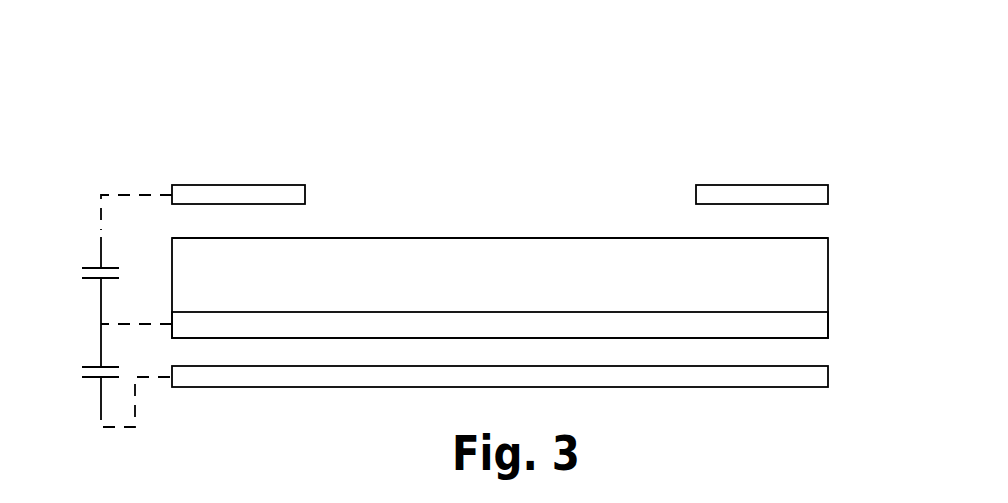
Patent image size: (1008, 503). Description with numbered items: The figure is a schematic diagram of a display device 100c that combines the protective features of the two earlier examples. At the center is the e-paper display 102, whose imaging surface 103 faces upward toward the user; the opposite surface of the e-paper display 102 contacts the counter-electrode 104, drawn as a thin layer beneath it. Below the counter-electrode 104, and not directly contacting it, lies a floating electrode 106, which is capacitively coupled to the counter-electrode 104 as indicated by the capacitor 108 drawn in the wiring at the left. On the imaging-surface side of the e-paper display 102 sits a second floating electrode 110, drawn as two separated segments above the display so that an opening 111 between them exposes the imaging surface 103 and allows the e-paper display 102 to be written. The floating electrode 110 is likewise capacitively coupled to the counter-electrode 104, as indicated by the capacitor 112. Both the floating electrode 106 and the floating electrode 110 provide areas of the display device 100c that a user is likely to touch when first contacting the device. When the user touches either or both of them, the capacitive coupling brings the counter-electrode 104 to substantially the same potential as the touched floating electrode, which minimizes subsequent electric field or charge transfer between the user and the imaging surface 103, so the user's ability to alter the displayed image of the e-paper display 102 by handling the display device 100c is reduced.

The display device 100c is at (548, 122).
The e-paper display 102 is at (815, 279).
The imaging surface 103 is at (592, 237).
The counter-electrode 104 is at (815, 322).
The floating electrode 106 is at (815, 376).
The capacitor 108 is at (96, 366).
The floating electrode 110 is at (192, 192).
The opening 111 is at (368, 200).
The capacitor 112 is at (96, 268).